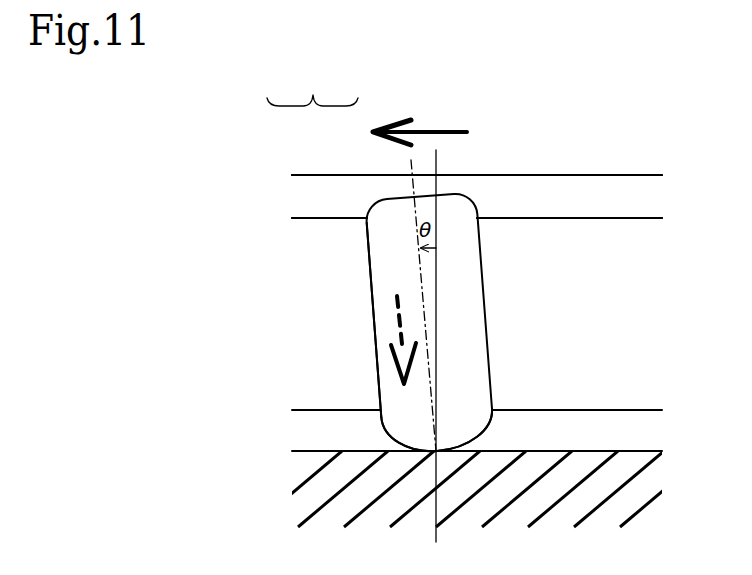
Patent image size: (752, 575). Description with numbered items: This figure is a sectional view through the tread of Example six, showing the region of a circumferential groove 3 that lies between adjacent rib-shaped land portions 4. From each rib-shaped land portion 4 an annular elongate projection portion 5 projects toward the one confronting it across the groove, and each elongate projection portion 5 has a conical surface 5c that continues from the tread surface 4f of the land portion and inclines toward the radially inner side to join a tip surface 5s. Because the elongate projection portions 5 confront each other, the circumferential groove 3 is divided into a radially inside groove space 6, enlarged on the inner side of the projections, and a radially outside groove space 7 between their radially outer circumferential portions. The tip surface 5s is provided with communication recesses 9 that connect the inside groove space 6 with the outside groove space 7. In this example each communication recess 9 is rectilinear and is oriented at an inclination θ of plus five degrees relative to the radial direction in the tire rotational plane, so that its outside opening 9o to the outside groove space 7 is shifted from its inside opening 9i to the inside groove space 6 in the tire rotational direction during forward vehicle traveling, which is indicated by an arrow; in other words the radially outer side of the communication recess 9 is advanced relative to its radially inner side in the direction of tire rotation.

The circumferential groove 3 is at (478, 193).
The rib-shaped land portion 4 is at (477, 138).
The tread surface 4f is at (562, 174).
The elongate projection portion 5 is at (317, 169).
The conical surface 5c is at (308, 198).
The tip surface 5s is at (325, 270).
The inside groove space 6 is at (598, 432).
The outside groove space 7 is at (598, 195).
The communication recess 9 is at (458, 322).
The outside opening 9o is at (397, 216).
The inside opening 9i is at (446, 412).